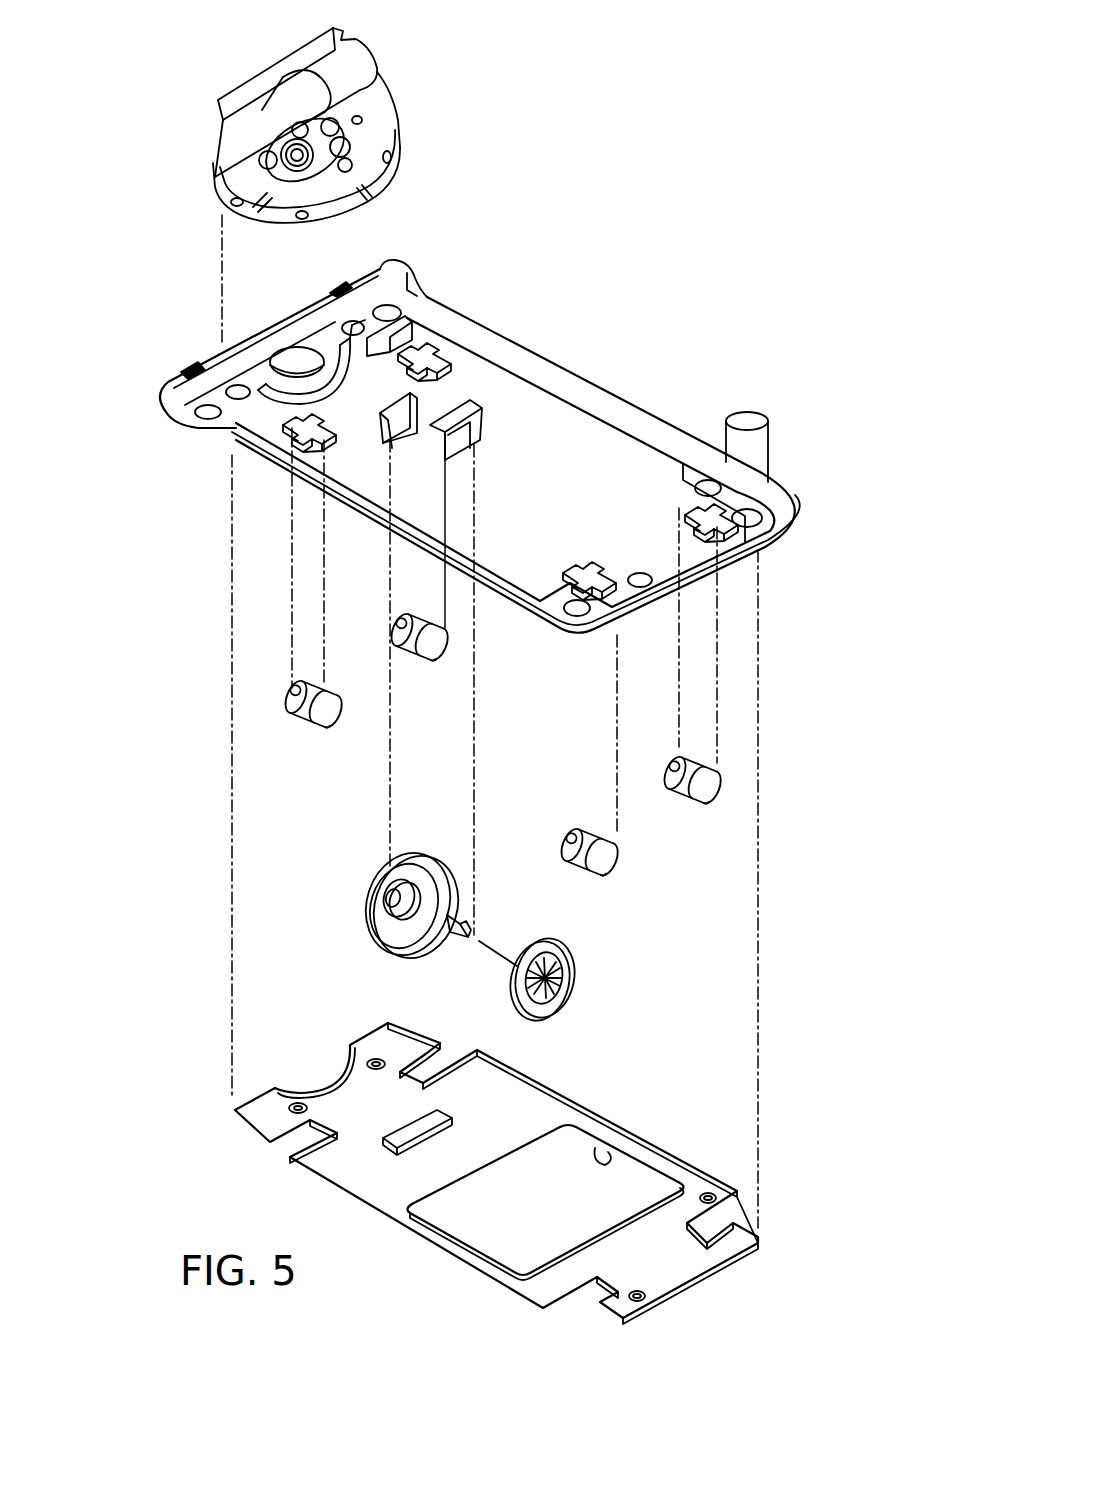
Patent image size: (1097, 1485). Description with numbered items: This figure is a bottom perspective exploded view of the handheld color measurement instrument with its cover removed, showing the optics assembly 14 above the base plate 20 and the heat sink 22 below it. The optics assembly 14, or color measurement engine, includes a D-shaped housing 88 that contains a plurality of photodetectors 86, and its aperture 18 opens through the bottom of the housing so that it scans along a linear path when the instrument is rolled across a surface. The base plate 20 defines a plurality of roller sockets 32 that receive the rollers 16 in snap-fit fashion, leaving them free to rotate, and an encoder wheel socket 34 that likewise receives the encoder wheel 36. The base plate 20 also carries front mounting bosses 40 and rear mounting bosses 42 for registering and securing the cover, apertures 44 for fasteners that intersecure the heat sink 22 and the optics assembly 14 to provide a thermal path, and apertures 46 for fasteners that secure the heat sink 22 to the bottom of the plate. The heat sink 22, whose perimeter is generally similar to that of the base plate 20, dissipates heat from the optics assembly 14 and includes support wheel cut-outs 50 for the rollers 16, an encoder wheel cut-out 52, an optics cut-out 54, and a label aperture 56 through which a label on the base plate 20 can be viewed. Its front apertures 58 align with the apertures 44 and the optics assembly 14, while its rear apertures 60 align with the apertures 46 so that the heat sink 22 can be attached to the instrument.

The optics assembly 14 is at (434, 64).
The housing 88 is at (400, 104).
The photodetectors 86 is at (345, 146).
The aperture 18 is at (305, 170).
The base plate 20 is at (603, 382).
The front mounting bosses 40 is at (408, 273).
The apertures 44 is at (350, 323).
The rear mounting bosses 42 is at (753, 432).
The apertures 46 is at (708, 480).
The roller sockets 32 is at (433, 348).
The encoder wheel socket 34 is at (430, 432).
The rollers 16 is at (425, 646).
The encoder wheel 36 is at (362, 931).
The heat sink 22 is at (568, 1090).
The optics cut-out 54 is at (325, 1082).
The support wheel cut-outs 50 is at (437, 1057).
The front apertures 58 is at (376, 1060).
The encoder wheel cut-out 52 is at (436, 1133).
The label aperture 56 is at (600, 1158).
The rear apertures 60 is at (712, 1195).